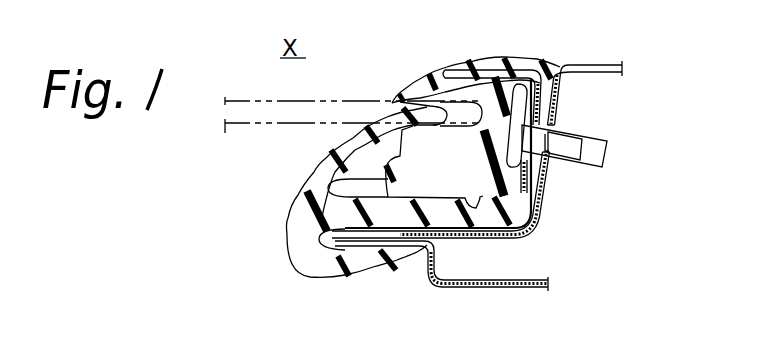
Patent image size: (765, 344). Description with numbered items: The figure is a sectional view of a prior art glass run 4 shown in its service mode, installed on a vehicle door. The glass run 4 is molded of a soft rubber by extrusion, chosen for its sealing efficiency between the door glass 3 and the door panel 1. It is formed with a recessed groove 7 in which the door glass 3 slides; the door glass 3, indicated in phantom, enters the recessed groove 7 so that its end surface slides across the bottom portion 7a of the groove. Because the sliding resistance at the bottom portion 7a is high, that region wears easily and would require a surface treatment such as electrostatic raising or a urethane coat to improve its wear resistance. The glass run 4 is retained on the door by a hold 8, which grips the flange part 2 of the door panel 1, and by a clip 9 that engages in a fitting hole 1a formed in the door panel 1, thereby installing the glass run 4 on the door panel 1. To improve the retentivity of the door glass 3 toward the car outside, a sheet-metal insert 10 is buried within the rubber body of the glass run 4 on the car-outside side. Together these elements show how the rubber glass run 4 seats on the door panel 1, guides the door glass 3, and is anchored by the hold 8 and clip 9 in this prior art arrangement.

The door panel 1 is at (622, 66).
The fitting hole 1a is at (557, 128).
The flange part 2 is at (363, 247).
The door glass 3 is at (238, 100).
The glass run 4 is at (505, 84).
The recessed groove 7 is at (448, 165).
The bottom portion 7a is at (447, 70).
The hold 8 is at (313, 254).
The clip 9 is at (601, 143).
The sheet-metal insert 10 is at (543, 68).